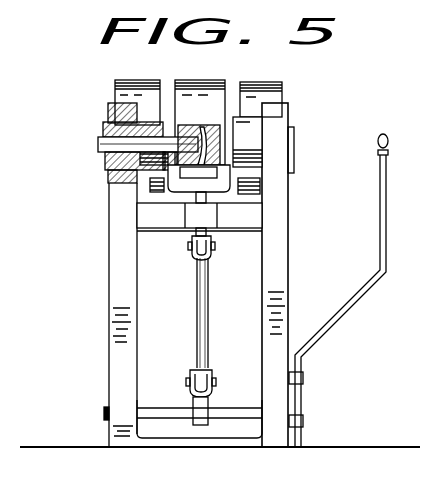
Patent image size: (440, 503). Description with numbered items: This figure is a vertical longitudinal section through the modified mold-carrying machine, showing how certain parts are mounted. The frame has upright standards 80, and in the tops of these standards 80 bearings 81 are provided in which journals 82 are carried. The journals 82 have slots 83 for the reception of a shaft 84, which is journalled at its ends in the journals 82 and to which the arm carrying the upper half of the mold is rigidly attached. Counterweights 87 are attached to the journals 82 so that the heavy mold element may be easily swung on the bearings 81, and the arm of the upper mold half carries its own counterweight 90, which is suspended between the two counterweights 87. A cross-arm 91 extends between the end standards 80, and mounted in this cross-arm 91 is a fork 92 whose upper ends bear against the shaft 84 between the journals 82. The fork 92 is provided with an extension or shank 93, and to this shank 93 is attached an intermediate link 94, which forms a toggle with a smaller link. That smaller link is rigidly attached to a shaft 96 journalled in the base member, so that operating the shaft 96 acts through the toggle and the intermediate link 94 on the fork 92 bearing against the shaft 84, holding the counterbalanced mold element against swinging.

The upright standards 80 is at (110, 217).
The bearings 81 is at (108, 165).
The journals 82 is at (118, 133).
The slots 83 is at (120, 140).
The shaft 84 is at (138, 145).
The counterweights 87 is at (115, 85).
The counterweight 90 is at (203, 88).
The cross-arm 91 is at (245, 218).
The fork 92 is at (183, 197).
The extension 93 is at (195, 233).
The intermediate link 94 is at (210, 305).
The shaft 96 is at (155, 410).